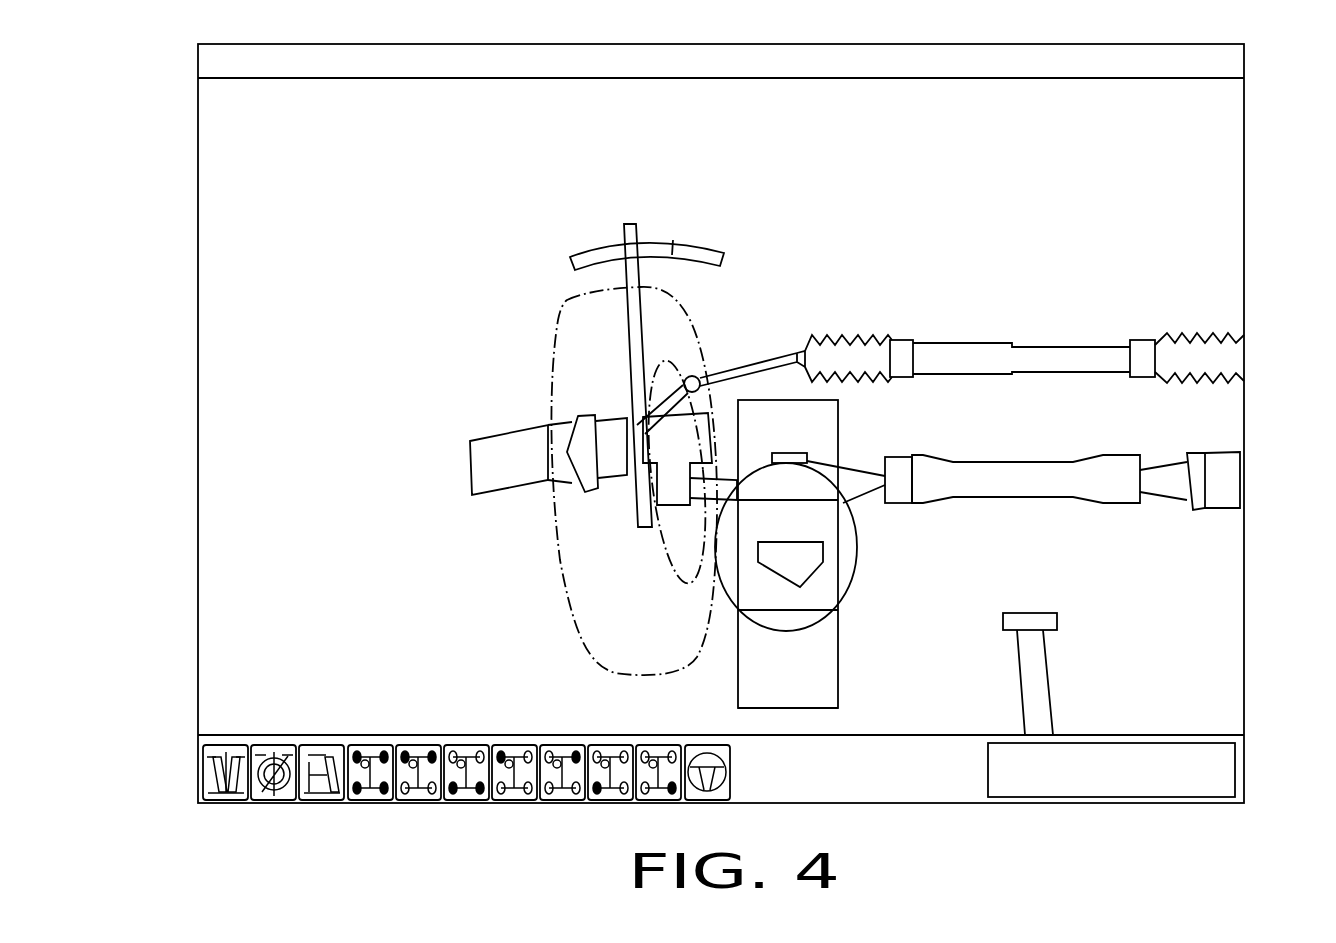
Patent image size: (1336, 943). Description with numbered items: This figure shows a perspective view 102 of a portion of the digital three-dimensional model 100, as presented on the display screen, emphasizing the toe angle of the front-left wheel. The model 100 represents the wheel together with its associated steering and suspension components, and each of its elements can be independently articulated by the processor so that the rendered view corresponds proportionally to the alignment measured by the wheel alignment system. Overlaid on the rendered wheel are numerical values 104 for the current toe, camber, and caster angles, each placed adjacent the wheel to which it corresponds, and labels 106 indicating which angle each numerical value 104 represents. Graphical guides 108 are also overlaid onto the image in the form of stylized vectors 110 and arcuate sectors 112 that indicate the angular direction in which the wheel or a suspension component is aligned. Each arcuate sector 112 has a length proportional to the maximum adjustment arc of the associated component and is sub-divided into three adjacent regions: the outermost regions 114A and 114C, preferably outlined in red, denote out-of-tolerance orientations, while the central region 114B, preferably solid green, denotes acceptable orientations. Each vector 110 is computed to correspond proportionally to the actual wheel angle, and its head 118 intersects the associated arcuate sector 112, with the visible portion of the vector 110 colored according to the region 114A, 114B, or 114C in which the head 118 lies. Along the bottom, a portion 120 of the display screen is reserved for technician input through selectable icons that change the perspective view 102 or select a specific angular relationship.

The three-dimensional model 100 is at (1108, 506).
The perspective view 102 is at (1033, 266).
The numerical values 104 is at (703, 173).
The labels 106 is at (604, 172).
The graphical guides 108 is at (735, 284).
The stylized vector 110 is at (621, 273).
The arcuate sector 112 is at (600, 245).
The outermost region 114A is at (812, 696).
The central region 114B is at (797, 609).
The outermost region 114C is at (818, 433).
The vector head 118 is at (634, 228).
The portion of the display screen 120 is at (178, 763).